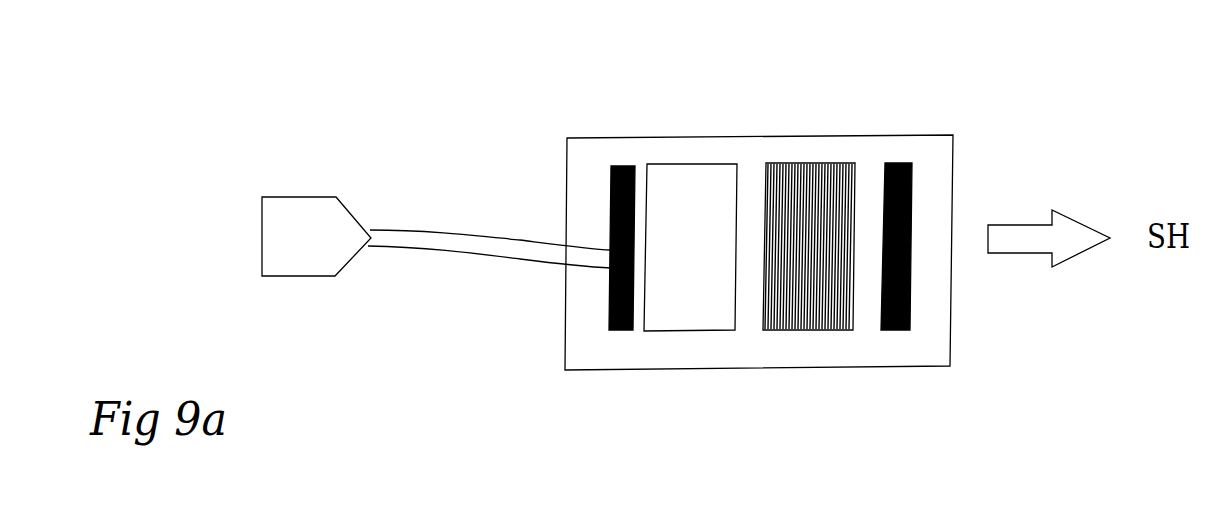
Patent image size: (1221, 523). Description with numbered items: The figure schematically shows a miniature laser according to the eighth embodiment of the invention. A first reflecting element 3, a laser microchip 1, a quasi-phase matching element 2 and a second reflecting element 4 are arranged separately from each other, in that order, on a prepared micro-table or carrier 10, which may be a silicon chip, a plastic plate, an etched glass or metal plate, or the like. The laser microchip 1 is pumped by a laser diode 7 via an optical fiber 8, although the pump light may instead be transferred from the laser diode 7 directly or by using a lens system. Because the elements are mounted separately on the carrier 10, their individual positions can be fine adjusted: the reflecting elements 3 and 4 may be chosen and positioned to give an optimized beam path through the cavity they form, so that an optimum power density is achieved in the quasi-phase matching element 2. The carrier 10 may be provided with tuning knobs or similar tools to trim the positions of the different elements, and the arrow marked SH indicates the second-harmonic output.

The laser microchip 1 is at (698, 186).
The quasi-phase matching element 2 is at (823, 168).
The first reflecting element 3 is at (612, 178).
The second reflecting element 4 is at (898, 166).
The laser diode 7 is at (333, 219).
The optical fiber 8 is at (464, 246).
The carrier 10 is at (932, 165).